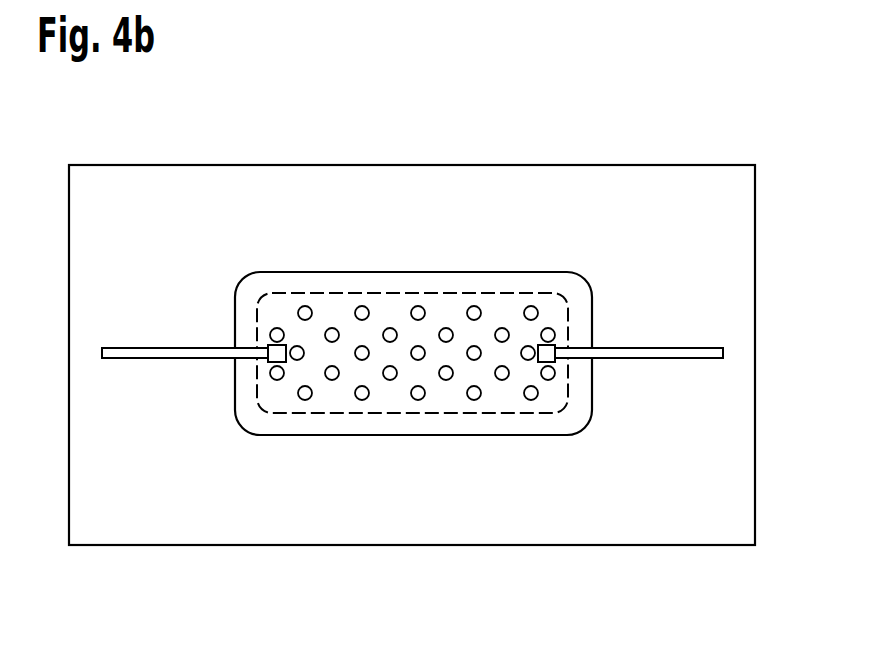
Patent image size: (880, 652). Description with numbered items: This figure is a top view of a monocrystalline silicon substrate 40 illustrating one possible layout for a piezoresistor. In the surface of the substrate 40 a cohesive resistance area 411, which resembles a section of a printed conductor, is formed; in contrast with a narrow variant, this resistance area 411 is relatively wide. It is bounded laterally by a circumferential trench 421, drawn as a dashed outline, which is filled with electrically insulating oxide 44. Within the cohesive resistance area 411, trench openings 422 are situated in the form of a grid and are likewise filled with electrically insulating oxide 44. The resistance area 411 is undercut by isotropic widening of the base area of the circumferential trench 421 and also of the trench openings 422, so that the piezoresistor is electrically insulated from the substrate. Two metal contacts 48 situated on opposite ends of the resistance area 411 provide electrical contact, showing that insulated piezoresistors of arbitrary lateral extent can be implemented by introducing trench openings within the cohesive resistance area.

The monocrystalline silicon substrate 40 is at (155, 177).
The resistance area 411 is at (400, 304).
The circumferential trench 421 is at (330, 420).
The trench openings 422 is at (474, 394).
The electrically insulating oxide 44 is at (413, 389).
The metal contacts 48 is at (640, 353).